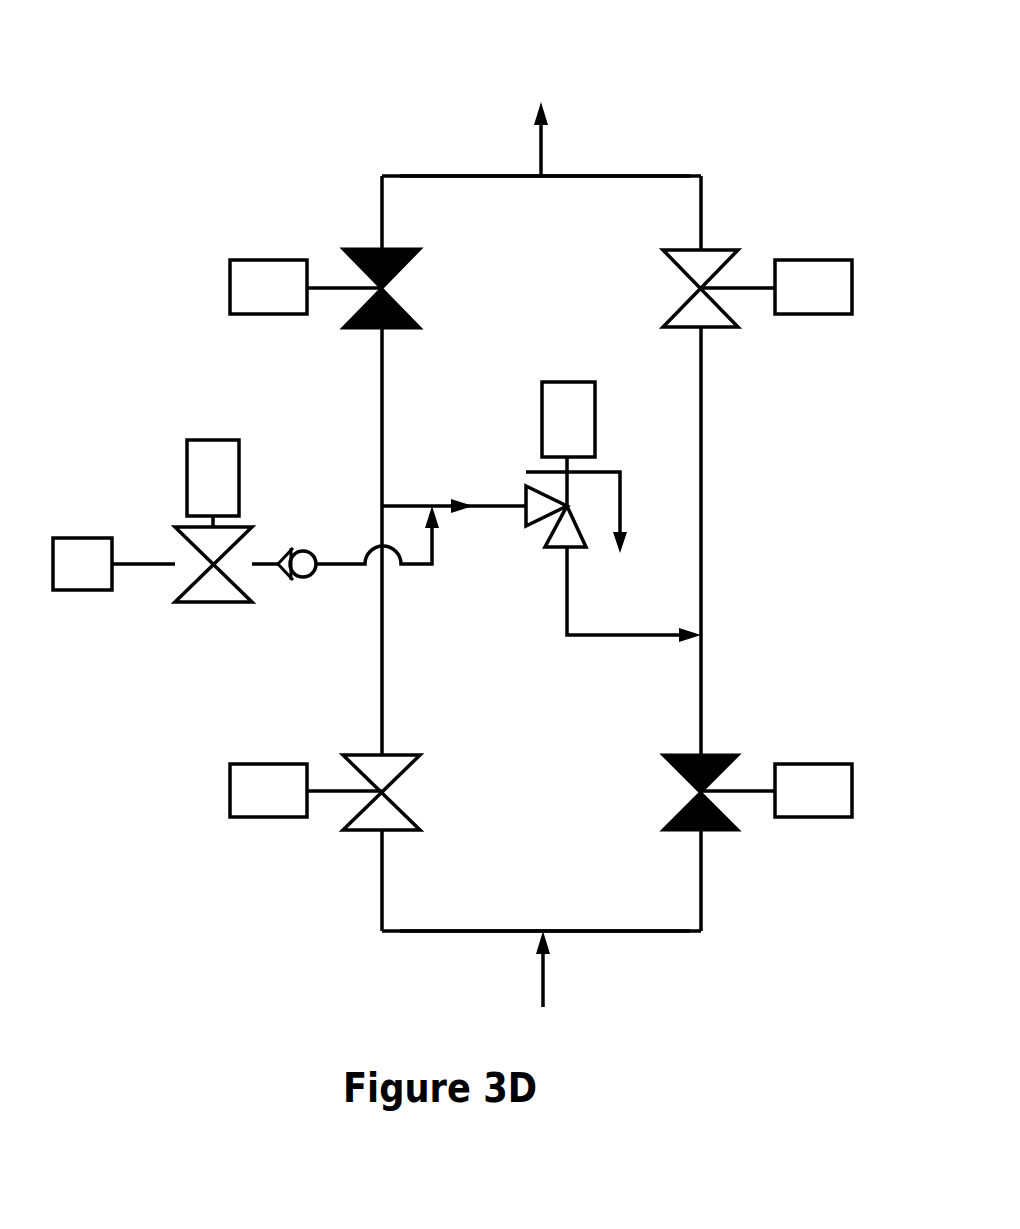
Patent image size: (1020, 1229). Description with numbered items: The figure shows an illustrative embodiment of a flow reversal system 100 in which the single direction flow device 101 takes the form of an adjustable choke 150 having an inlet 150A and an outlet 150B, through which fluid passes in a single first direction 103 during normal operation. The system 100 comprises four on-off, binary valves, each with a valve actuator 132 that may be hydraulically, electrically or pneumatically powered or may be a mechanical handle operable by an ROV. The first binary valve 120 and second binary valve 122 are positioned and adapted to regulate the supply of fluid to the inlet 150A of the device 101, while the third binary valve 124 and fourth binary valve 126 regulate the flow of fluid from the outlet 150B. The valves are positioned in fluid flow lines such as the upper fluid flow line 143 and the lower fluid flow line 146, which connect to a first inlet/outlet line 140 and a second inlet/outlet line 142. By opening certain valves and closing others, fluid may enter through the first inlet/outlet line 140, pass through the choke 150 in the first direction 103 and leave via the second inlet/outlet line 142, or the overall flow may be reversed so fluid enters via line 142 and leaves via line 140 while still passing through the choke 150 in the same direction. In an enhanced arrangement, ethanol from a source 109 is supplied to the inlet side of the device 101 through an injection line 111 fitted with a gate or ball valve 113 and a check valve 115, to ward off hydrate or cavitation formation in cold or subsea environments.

The flow reversal system 100 is at (320, 93).
The single direction flow device 101 is at (565, 357).
The first direction 103 is at (598, 472).
The source 109 is at (83, 558).
The injection line 111 is at (342, 562).
The gate or ball valve 113 is at (215, 573).
The check valve 115 is at (290, 540).
The first binary valve 120 is at (305, 232).
The second binary valve 122 is at (308, 867).
The third binary valve 124 is at (795, 233).
The fourth binary valve 126 is at (745, 840).
The valve actuator 132 is at (558, 405).
The first inlet/outlet line 140 is at (541, 153).
The second inlet/outlet line 142 is at (543, 978).
The fluid flow line 143 is at (616, 176).
The fluid flow line 146 is at (667, 931).
The adjustable choke 150 is at (528, 535).
The inlet 150A is at (500, 502).
The outlet 150B is at (571, 560).